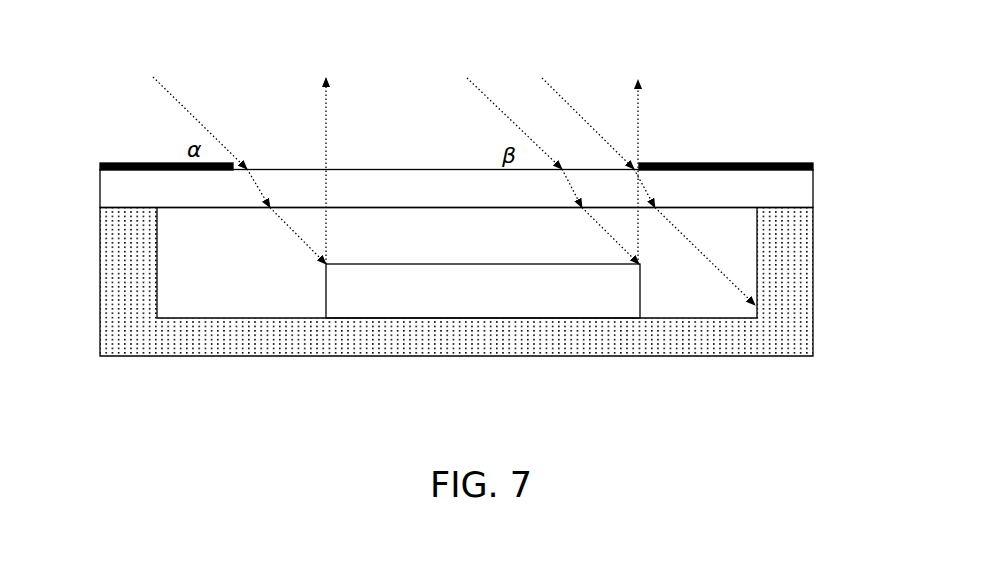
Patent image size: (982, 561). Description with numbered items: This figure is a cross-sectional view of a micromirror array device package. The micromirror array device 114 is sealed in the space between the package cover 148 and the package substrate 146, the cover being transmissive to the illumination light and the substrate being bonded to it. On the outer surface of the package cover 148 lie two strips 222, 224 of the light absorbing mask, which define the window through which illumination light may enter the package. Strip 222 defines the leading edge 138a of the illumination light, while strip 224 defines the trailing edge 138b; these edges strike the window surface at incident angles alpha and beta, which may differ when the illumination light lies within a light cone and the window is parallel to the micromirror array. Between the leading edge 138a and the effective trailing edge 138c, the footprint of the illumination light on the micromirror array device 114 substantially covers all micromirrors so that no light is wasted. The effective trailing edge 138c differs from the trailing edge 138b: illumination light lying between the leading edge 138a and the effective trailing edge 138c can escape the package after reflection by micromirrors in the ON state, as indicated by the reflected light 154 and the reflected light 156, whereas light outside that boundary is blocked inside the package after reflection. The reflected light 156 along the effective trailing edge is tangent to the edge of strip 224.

The micromirror array device 114 is at (483, 291).
The package substrate 146 is at (193, 338).
The package cover 148 is at (815, 190).
The strip of light absorbing mask 222 is at (110, 162).
The strip of light absorbing mask 224 is at (725, 160).
The leading edge of illumination light 138a is at (182, 102).
The trailing edge of illumination light 138b is at (567, 100).
The effective trailing edge of illumination light 138c is at (480, 92).
The reflected light 154 is at (325, 135).
The reflected light 156 is at (643, 122).